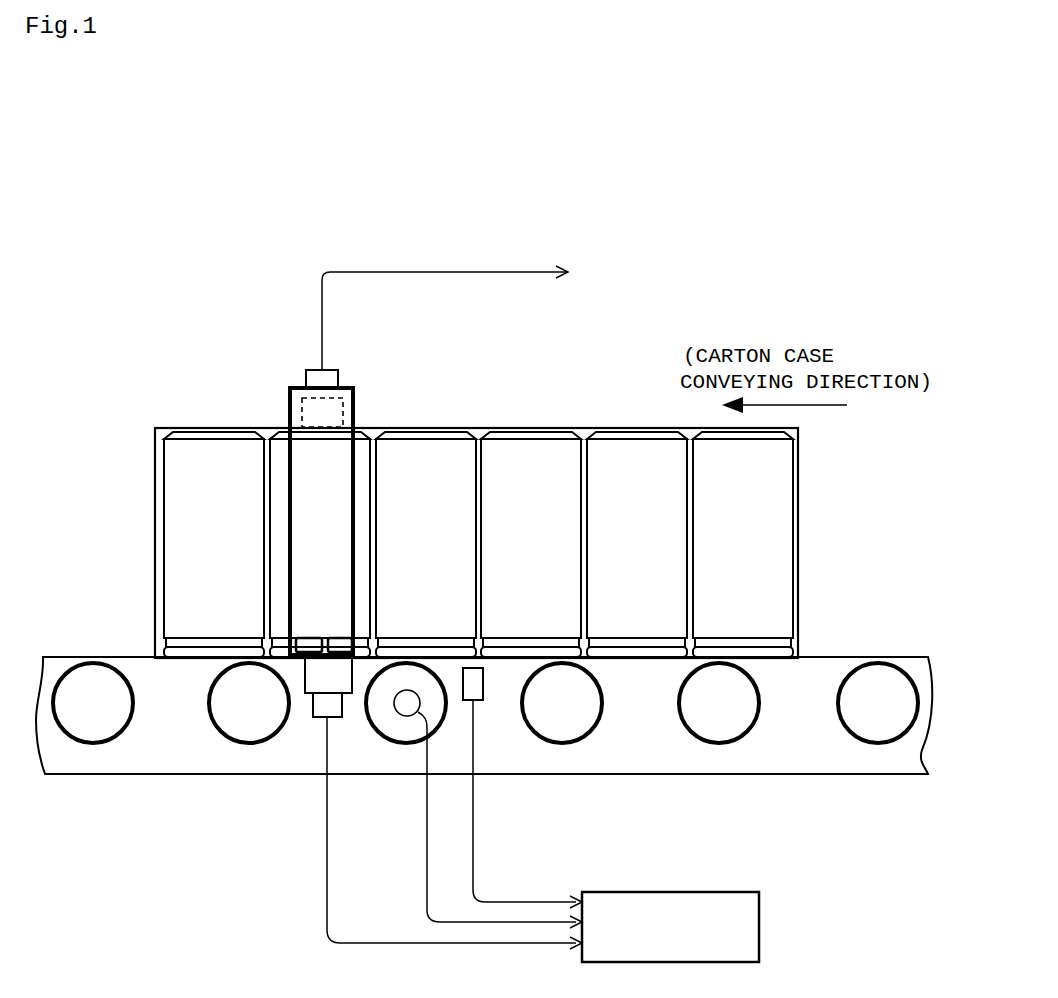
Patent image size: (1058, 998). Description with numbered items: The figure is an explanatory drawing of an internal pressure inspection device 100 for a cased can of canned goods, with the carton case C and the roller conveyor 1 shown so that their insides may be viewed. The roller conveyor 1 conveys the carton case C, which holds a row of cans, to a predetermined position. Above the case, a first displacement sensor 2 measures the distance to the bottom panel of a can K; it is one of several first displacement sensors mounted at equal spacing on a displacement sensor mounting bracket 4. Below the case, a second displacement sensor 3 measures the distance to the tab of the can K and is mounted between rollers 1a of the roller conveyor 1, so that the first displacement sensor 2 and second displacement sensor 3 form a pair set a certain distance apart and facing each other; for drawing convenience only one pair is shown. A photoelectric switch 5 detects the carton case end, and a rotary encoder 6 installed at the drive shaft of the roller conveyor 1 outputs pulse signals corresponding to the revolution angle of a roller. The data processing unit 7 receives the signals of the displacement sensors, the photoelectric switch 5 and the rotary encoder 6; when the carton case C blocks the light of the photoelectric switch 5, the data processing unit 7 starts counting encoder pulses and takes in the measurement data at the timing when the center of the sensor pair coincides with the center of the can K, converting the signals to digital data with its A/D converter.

The internal pressure inspection device 100 is at (470, 229).
The roller conveyor 1 is at (675, 775).
The roller 1a is at (737, 727).
The first displacement sensor 2 is at (317, 377).
The second displacement sensor 3 is at (327, 698).
The displacement sensor mounting bracket 4 is at (355, 415).
The photoelectric switch 5 is at (477, 687).
The rotary encoder 6 is at (407, 707).
The data processing unit 7 is at (820, 963).
The carton case C is at (523, 428).
The can K is at (277, 482).